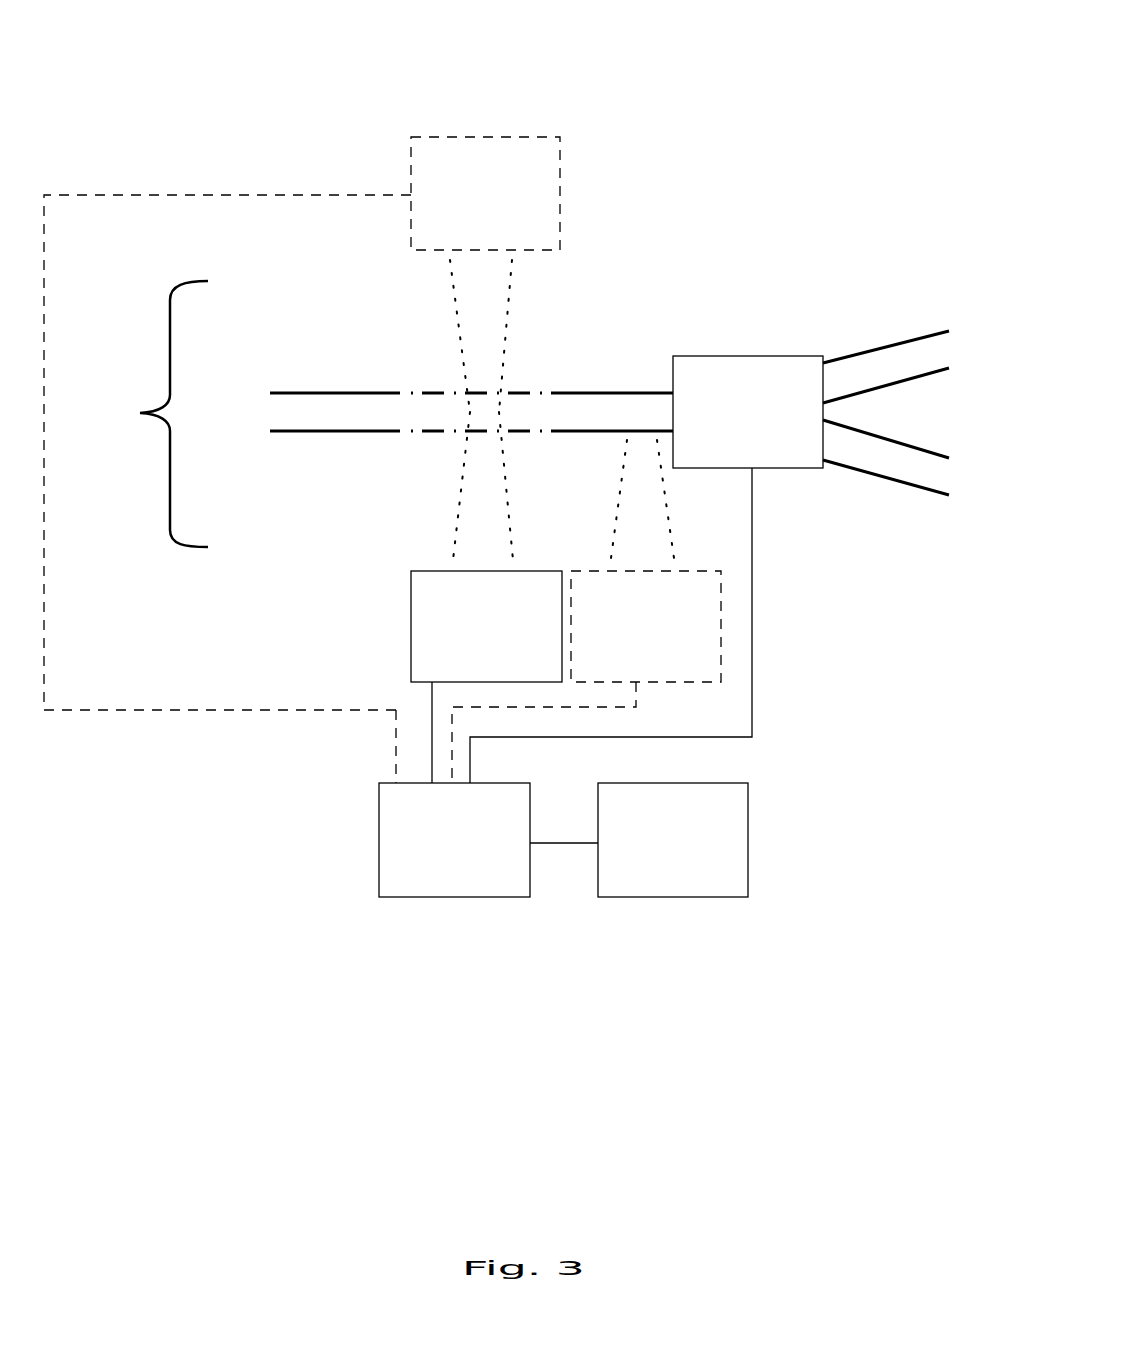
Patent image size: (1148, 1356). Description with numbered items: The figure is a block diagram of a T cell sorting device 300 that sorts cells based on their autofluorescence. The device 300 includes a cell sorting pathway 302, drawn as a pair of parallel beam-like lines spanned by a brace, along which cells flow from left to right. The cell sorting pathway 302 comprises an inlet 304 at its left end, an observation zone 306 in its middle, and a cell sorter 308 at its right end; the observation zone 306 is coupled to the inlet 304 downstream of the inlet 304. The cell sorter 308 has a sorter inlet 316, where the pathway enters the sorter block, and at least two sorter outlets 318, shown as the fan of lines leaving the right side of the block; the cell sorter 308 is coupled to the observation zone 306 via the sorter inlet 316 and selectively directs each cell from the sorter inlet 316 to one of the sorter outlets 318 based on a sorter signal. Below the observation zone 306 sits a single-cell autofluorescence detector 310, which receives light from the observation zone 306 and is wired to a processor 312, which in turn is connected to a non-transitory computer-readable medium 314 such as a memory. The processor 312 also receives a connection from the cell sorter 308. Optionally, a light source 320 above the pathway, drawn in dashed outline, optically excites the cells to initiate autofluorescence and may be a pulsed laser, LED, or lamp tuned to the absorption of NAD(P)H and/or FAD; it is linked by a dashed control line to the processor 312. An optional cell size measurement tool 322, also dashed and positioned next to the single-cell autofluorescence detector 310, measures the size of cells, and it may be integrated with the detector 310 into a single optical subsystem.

The T cell sorting device 300 is at (700, 63).
The cell sorting pathway 302 is at (139, 414).
The inlet 304 is at (278, 415).
The observation zone 306 is at (482, 412).
The cell sorter 308 is at (646, 569).
The single-cell autofluorescence detector 310 is at (486, 597).
The processor 312 is at (454, 840).
The non-transitory computer-readable medium 314 is at (639, 840).
The sorter inlet 316 is at (673, 410).
The sorter outlets 318 is at (823, 383).
The light source 320 is at (485, 274).
The cell size measurement tool 322 is at (586, 611).